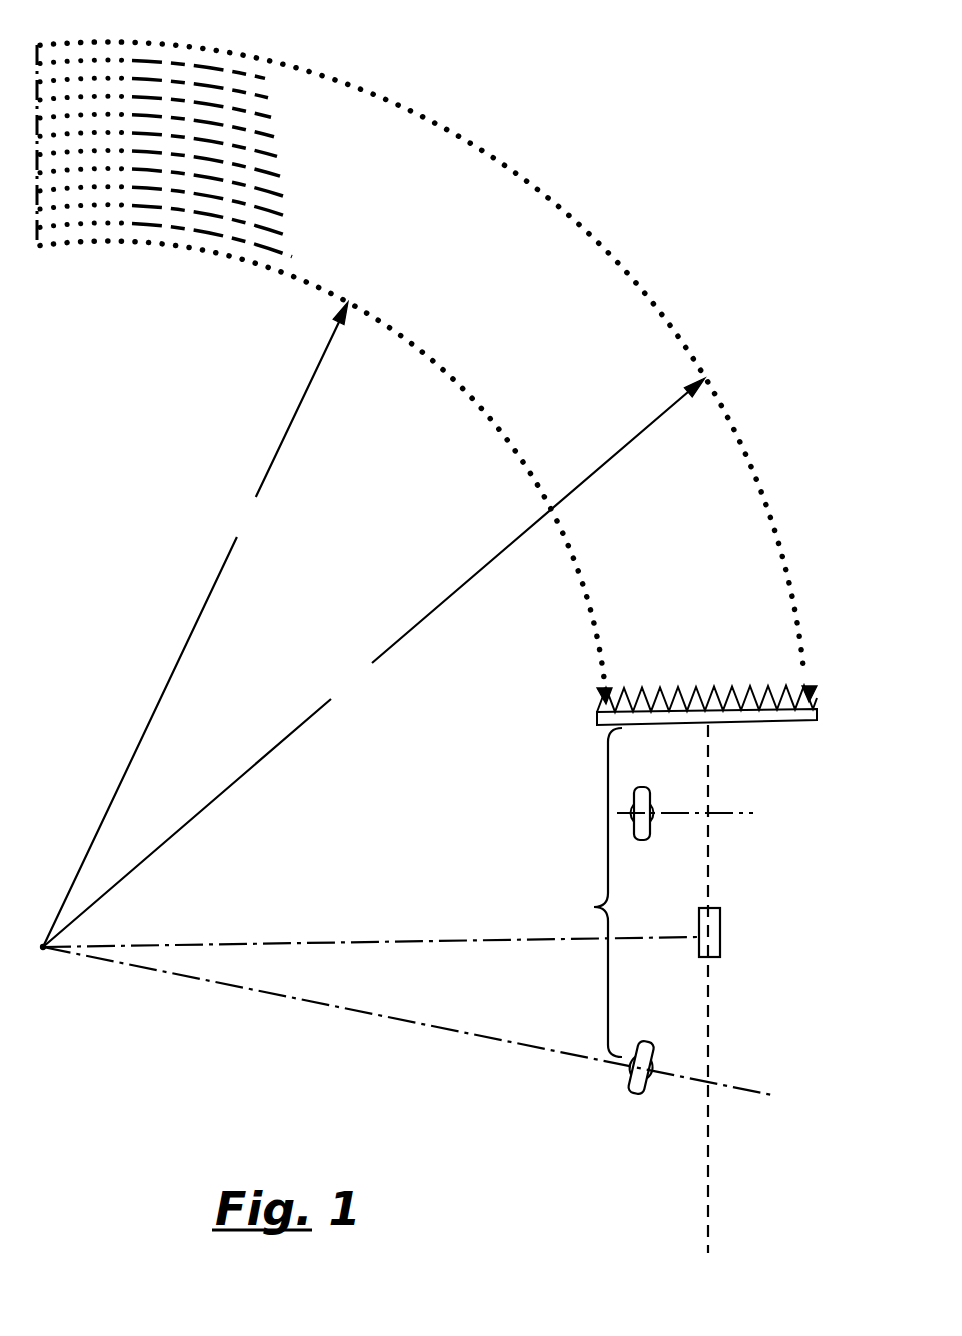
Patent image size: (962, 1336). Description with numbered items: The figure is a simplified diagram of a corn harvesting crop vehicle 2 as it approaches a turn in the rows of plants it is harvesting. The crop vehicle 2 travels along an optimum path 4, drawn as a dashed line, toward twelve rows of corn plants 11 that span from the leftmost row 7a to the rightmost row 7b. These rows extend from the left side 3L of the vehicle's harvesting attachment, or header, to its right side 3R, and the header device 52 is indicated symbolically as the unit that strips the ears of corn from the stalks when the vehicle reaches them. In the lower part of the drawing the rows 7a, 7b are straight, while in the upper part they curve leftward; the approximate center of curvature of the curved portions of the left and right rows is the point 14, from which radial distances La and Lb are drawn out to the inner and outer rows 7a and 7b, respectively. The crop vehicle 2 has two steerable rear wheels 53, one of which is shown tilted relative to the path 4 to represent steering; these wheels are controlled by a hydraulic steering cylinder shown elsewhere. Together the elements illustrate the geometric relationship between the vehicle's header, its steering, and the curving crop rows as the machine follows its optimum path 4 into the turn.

The row of corn plants 7a is at (506, 440).
The row of corn plants 7b is at (676, 326).
The corn plants 11 is at (743, 452).
The distance to inner arc La is at (195, 624).
The distance to outer arc Lb is at (374, 662).
The point 14 is at (43, 950).
The header device 52 is at (787, 725).
The left side 3L is at (597, 700).
The right side 3R is at (818, 694).
The crop vehicle 2 is at (657, 892).
The steerable rear wheels 53 is at (632, 1095).
The optimum path 4 is at (708, 1180).